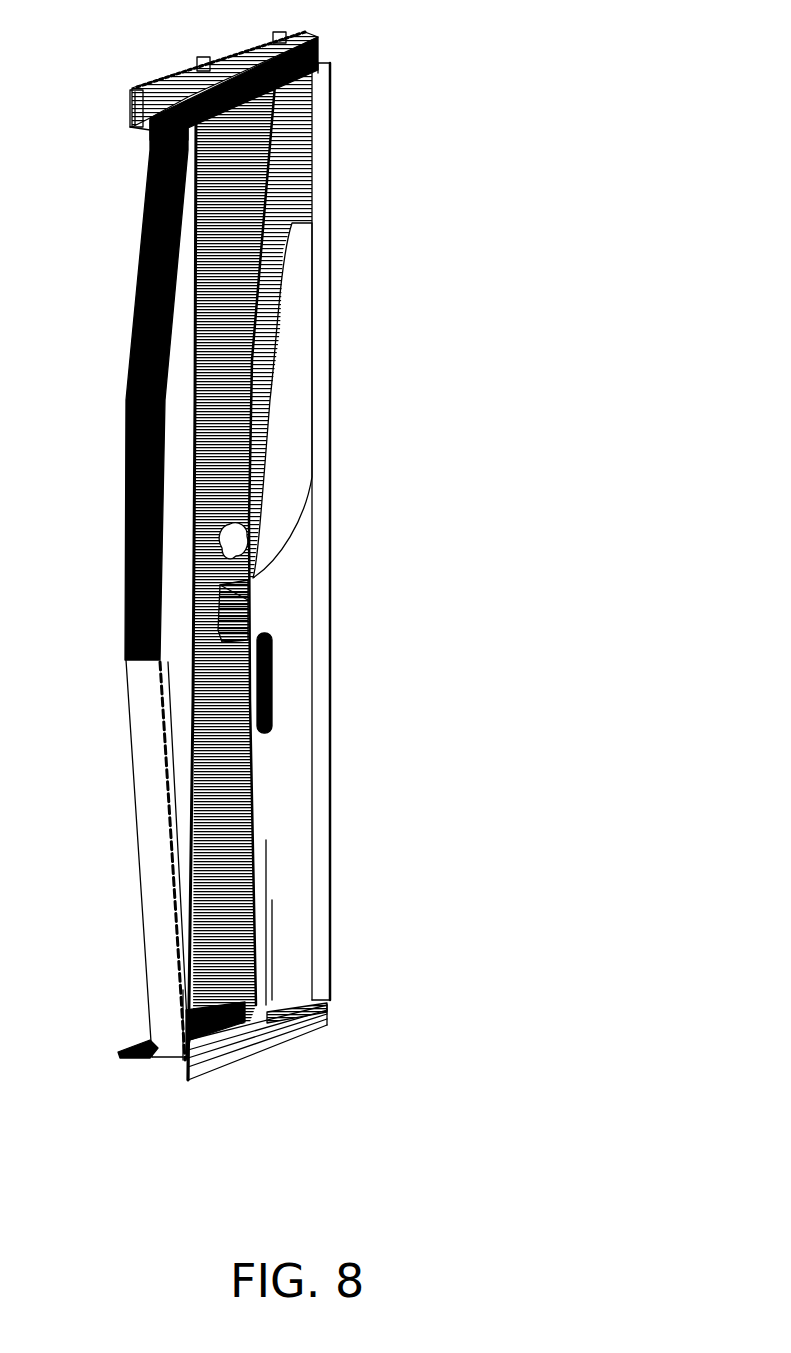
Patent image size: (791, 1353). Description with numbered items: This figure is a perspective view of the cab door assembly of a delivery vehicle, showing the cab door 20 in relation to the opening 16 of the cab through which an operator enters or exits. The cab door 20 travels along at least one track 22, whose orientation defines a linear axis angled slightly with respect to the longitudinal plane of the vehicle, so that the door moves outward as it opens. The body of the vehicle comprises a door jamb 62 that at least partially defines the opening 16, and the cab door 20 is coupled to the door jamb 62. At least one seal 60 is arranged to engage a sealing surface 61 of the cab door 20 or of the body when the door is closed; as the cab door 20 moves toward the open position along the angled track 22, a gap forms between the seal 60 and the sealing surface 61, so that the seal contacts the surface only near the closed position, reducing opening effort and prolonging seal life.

The opening 16 is at (192, 497).
The cab door 20 is at (305, 562).
The track 22 is at (140, 88).
The seal 60 is at (202, 85).
The sealing surface 61 is at (270, 73).
The door jamb 62 is at (318, 44).